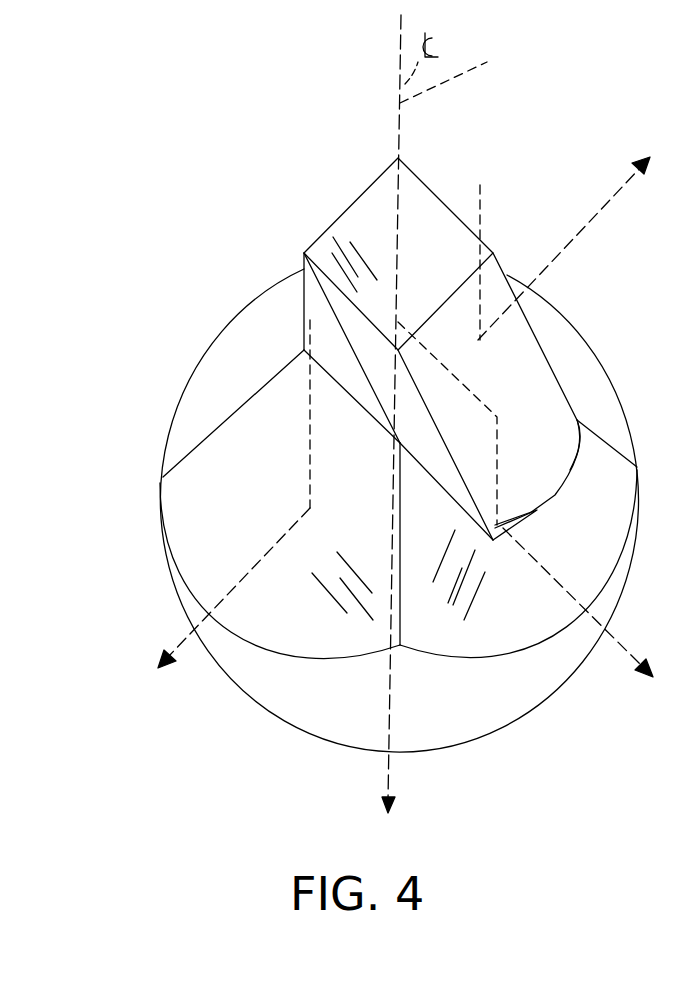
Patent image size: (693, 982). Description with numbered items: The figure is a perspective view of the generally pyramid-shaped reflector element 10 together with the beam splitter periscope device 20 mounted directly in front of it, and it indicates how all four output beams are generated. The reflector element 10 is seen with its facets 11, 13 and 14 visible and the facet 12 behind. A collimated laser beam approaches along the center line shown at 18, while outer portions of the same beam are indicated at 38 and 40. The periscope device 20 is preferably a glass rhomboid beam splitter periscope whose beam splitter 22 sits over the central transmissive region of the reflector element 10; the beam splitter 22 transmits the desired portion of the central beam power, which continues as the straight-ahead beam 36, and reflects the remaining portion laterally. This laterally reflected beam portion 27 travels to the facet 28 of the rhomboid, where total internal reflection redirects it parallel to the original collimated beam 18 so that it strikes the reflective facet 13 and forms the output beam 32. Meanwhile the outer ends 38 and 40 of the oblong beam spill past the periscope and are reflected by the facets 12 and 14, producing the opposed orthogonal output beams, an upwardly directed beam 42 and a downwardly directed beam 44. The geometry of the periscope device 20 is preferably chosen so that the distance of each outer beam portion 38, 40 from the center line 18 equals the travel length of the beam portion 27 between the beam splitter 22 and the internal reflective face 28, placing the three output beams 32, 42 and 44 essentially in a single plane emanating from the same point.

The reflector element 10 is at (178, 392).
The facet 11 is at (230, 358).
The facet 12 is at (553, 332).
The reflective facet 13 is at (523, 616).
The facet 14 is at (303, 611).
The collimated beam 18 is at (461, 68).
The beam splitter periscope device 20 is at (433, 187).
The beam splitter 22 is at (350, 340).
The laterally reflected beam portion 27 is at (463, 380).
The facet 28 is at (565, 451).
The output beam 32 is at (627, 647).
The straight-ahead beam 36 is at (390, 773).
The outer end of the oblong beam 38 is at (482, 218).
The outer end of the oblong beam 40 is at (307, 445).
The upwardly directed beam 42 is at (606, 200).
The downwardly directed beam 44 is at (190, 637).